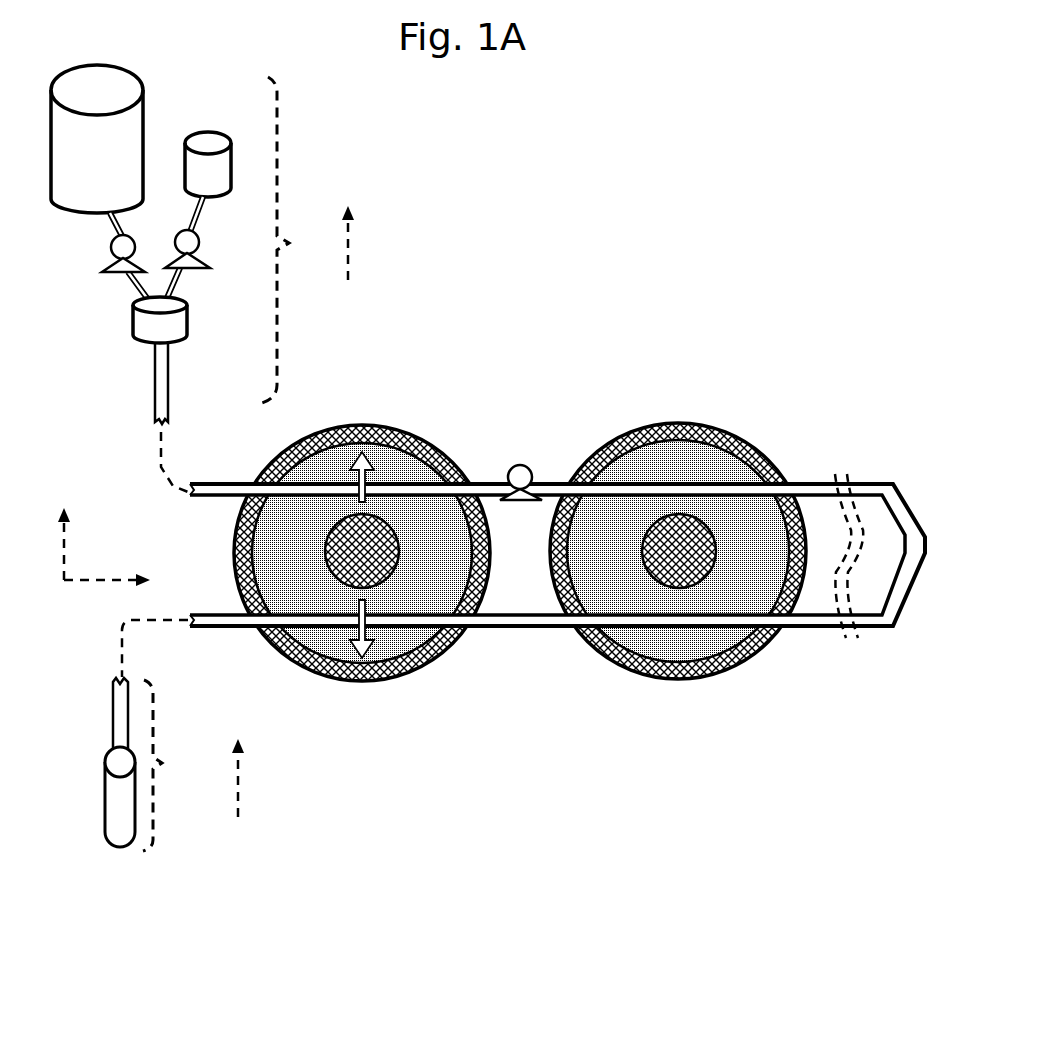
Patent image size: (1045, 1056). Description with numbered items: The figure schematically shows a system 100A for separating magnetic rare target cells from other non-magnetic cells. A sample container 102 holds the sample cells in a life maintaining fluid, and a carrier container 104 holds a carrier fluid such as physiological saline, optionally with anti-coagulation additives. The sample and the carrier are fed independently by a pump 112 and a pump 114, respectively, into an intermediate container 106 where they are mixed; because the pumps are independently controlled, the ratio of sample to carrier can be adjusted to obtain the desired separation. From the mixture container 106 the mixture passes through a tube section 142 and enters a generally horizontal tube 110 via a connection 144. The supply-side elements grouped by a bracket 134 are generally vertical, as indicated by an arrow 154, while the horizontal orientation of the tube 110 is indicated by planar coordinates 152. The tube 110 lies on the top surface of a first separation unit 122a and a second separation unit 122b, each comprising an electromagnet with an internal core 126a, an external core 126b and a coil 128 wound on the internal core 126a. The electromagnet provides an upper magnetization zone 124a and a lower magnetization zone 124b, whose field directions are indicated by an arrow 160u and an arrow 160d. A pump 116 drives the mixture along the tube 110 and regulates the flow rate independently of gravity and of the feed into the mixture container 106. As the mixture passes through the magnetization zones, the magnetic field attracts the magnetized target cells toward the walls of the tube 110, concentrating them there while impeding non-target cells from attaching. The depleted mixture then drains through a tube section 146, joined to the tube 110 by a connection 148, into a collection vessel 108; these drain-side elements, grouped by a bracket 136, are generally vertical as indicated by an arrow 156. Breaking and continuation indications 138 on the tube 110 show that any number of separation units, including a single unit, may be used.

The system for separation of rare cells 100A is at (574, 283).
The sample container 102 is at (222, 133).
The carrier container 104 is at (143, 112).
The intermediate container 106 is at (187, 318).
The collection vessel 108 is at (107, 817).
The tube 110 is at (557, 531).
The pump 112 is at (200, 253).
The pump 114 is at (112, 252).
The pump 116 is at (518, 503).
The separation unit 122a is at (361, 547).
The separation unit 122b is at (677, 423).
The magnetization zone 124a is at (398, 470).
The magnetization zone 124b is at (334, 641).
The internal core 126a is at (385, 562).
The external core 126b is at (440, 653).
The coil 128 is at (270, 550).
The bracket 134 is at (277, 150).
The bracket 136 is at (158, 770).
The breaking/continuation indications 138 is at (858, 644).
The tube section 142 is at (155, 390).
The connection 144 is at (160, 458).
The tube section 146 is at (115, 717).
The connection 148 is at (128, 633).
The planar coordinates 152 is at (95, 580).
The arrow 154 is at (348, 259).
The arrow 156 is at (240, 797).
The arrow 160u is at (358, 447).
The arrow 160d is at (367, 658).